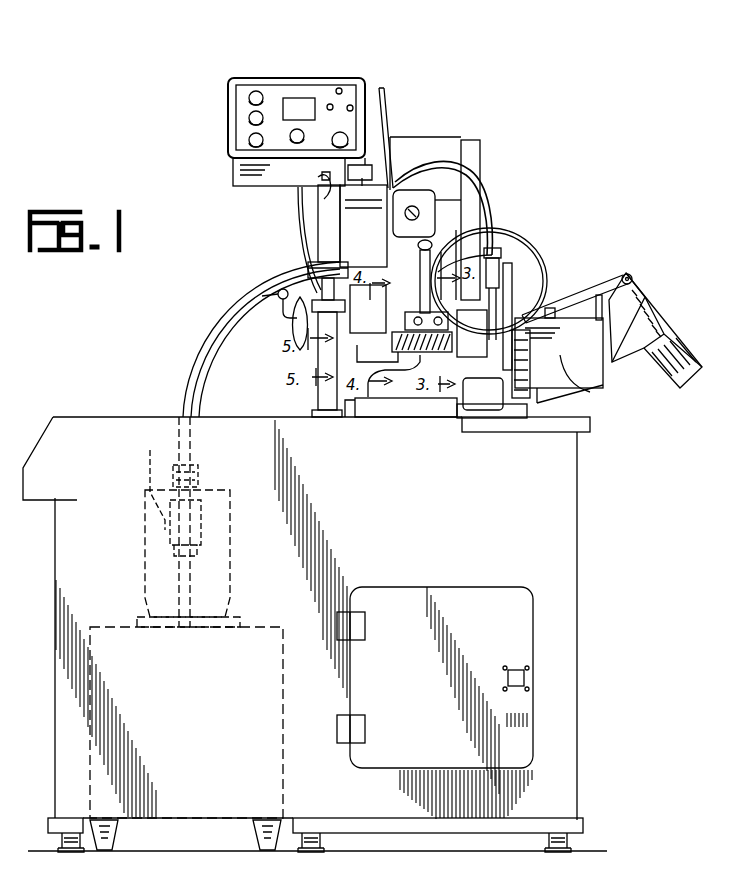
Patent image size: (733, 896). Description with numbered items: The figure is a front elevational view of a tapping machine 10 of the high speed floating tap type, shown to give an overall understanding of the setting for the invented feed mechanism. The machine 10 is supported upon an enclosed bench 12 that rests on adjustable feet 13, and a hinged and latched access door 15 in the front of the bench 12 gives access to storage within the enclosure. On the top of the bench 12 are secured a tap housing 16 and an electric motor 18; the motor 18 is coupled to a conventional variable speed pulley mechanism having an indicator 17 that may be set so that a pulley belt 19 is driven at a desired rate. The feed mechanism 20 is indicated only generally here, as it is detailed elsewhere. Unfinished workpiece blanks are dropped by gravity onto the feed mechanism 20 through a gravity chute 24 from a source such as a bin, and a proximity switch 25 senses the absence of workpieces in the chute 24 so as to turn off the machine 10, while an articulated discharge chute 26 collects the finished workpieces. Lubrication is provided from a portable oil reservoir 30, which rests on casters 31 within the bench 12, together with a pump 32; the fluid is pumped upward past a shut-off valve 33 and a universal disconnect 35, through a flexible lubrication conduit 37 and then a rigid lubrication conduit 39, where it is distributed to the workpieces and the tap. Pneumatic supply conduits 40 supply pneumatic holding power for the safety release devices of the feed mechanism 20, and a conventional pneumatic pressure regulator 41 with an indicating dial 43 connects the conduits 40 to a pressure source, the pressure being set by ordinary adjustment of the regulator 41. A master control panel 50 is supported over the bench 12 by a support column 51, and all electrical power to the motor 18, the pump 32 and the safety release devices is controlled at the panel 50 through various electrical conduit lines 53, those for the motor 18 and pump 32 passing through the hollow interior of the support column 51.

The tapping machine 10 is at (172, 341).
The enclosed bench 12 is at (462, 521).
The adjustable feet 13 is at (70, 853).
The access door 15 is at (425, 689).
The tap housing 16 is at (584, 378).
The indicator 17 is at (428, 214).
The electric motor 18 is at (478, 166).
The pulley belt 19 is at (543, 280).
The feed mechanism 20 is at (382, 411).
The gravity chute 24 is at (400, 172).
The proximity switch 25 is at (386, 163).
The articulated discharge chute 26 is at (675, 385).
The portable oil reservoir 30 is at (215, 772).
The casters 31 is at (117, 850).
The pump 32 is at (220, 527).
The shut-off valve 33 is at (197, 513).
The universal disconnect 35 is at (197, 468).
The flexible lubrication conduit 37 is at (212, 357).
The rigid lubrication conduit 39 is at (432, 262).
The pneumatic supply conduits 40 is at (305, 270).
The pneumatic pressure regulator 41 is at (295, 322).
The indicating dial 43 is at (280, 288).
The master control panel 50 is at (282, 90).
The support column 51 is at (372, 208).
The electrical conduit lines 53 is at (322, 196).